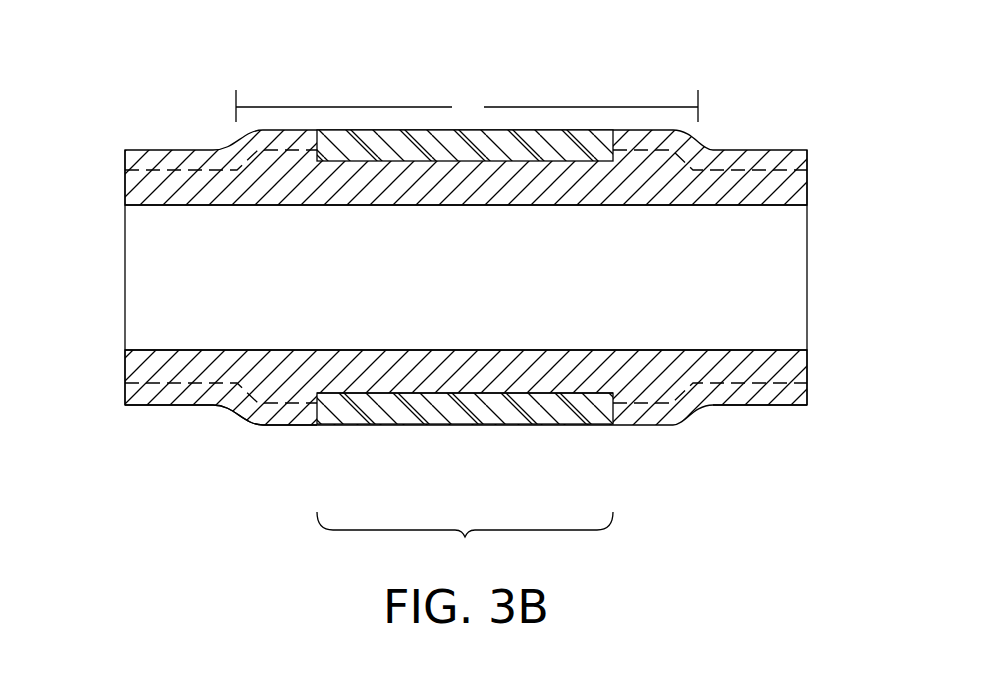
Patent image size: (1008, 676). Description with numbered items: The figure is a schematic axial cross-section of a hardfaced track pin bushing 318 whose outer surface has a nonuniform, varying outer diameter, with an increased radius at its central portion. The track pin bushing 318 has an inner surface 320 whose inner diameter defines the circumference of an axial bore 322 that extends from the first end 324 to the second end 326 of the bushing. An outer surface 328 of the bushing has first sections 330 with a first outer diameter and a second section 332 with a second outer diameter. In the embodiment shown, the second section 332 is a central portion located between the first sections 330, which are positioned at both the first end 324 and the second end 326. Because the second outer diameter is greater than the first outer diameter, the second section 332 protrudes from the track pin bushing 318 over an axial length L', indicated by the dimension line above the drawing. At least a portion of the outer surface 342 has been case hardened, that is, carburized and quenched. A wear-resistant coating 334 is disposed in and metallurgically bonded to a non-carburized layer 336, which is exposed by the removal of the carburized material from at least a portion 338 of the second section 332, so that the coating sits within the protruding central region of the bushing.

The track pin bushing 318 is at (657, 80).
The inner surface 320 is at (657, 221).
The axial bore 322 is at (483, 290).
The first end 324 is at (826, 249).
The second end 326 is at (108, 278).
The outer surface 328 is at (658, 441).
The first section 330 is at (181, 432).
The second section 332 is at (285, 456).
The wear-resistant coating 334 is at (515, 418).
The non-carburized layer 336 is at (393, 412).
The portion of the second section 338 is at (465, 348).
The outer surface 342 is at (258, 410).